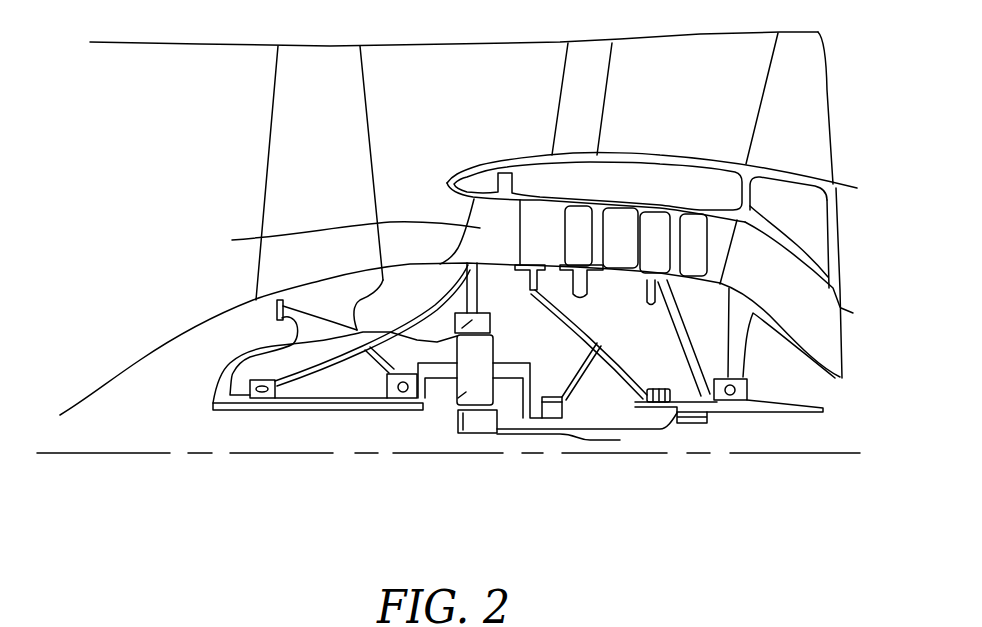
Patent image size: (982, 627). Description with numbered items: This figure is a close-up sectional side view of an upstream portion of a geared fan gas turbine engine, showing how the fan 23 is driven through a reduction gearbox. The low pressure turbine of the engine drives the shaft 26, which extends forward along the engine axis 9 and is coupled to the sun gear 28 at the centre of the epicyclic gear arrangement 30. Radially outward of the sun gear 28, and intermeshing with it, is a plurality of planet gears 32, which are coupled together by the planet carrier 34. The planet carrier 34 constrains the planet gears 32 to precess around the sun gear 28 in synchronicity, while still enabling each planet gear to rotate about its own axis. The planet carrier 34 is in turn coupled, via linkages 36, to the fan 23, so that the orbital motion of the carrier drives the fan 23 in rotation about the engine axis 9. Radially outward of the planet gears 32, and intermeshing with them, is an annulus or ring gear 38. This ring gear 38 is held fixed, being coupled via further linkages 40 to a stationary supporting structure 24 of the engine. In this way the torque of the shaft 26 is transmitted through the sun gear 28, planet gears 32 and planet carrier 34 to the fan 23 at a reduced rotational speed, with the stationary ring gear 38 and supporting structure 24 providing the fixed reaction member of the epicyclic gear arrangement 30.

The engine axis 9 is at (150, 455).
The fan 23 is at (280, 153).
The stationary supporting structure 24 is at (390, 307).
The shaft 26 is at (620, 440).
The sun gear 28 is at (477, 422).
The epicyclic gear arrangement 30 is at (443, 385).
The planet gears 32 is at (460, 400).
The planet carrier 34 is at (522, 391).
The linkages 36 is at (430, 411).
The ring gear 38 is at (277, 300).
The linkages 40 is at (468, 302).